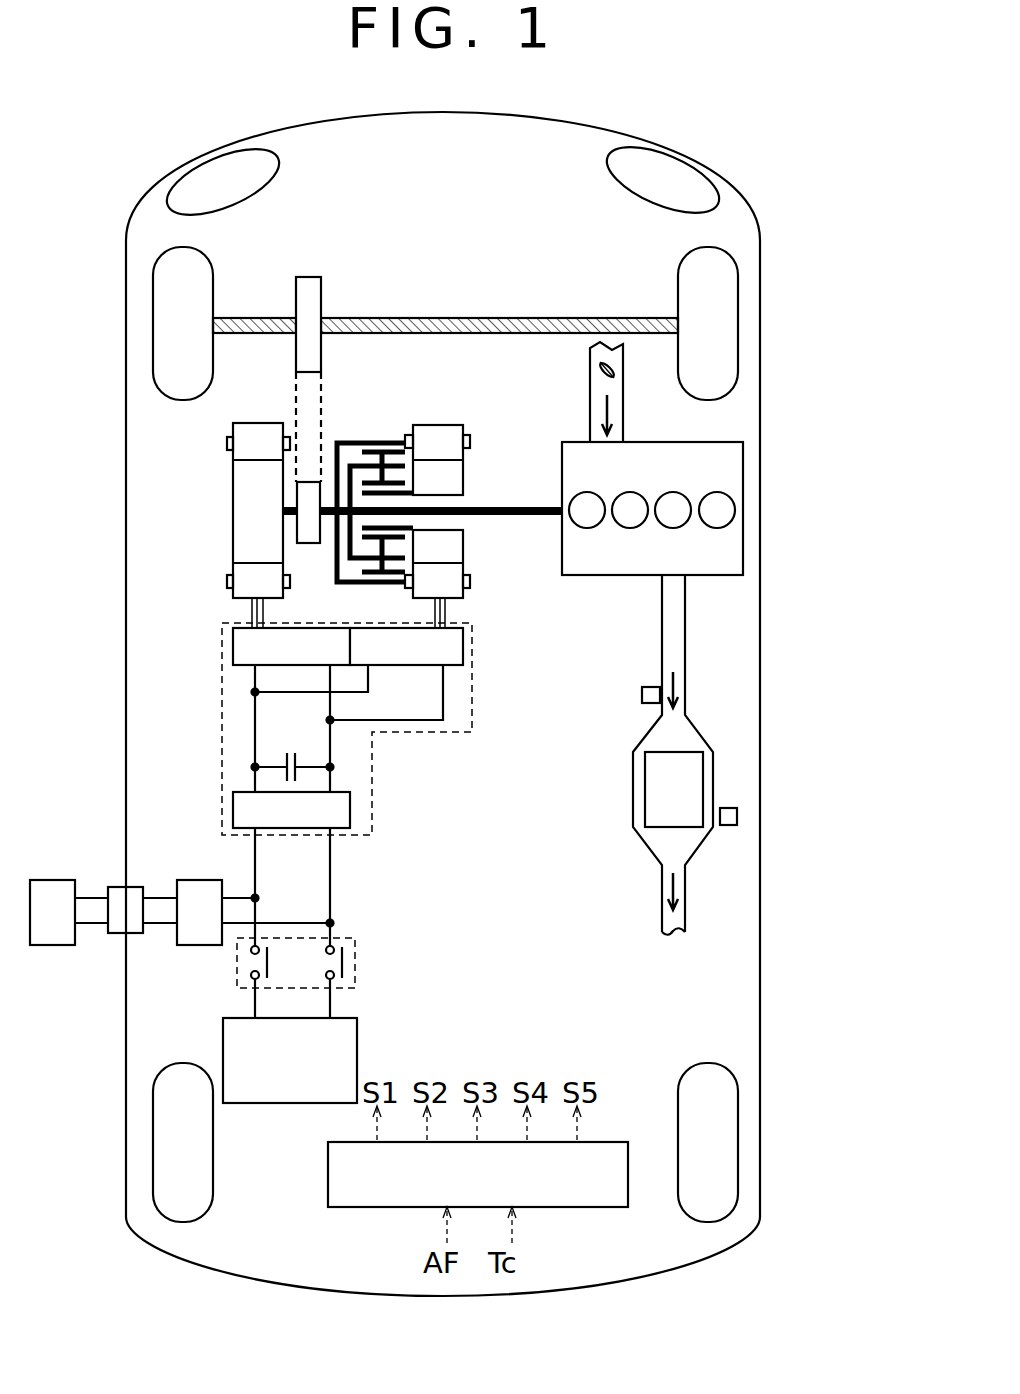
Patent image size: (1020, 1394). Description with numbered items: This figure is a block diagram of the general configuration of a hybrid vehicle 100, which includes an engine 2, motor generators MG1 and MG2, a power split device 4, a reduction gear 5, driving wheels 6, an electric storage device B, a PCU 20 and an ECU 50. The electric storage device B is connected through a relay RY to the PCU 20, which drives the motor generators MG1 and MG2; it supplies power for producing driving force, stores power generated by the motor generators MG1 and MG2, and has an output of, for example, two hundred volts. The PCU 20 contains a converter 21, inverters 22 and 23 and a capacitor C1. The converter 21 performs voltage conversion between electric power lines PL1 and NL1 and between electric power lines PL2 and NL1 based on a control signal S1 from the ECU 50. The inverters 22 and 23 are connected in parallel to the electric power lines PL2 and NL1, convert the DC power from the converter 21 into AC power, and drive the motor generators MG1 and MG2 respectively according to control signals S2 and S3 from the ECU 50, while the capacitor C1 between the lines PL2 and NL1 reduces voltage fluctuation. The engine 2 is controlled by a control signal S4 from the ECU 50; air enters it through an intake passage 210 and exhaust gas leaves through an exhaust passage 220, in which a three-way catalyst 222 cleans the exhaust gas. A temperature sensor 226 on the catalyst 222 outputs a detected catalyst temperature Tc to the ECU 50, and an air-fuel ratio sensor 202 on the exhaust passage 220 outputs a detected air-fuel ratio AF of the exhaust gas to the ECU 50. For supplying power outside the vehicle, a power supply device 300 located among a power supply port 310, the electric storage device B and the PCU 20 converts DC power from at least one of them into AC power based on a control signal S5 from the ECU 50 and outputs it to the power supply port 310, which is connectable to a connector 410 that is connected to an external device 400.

The hybrid vehicle 100 is at (106, 77).
The engine 2 is at (743, 556).
The power split device 4 is at (372, 440).
The reduction gear 5 is at (308, 272).
The driving wheels 6 is at (738, 330).
The motor generator MG1 is at (438, 425).
The motor generator MG2 is at (258, 423).
The PCU (Power Control Unit) 20 is at (347, 800).
The converter 21 is at (233, 803).
The inverter 22 is at (365, 627).
The inverter 23 is at (287, 628).
The ECU (Electronic Control Unit) 50 is at (328, 1172).
The air-fuel ratio sensor 202 is at (650, 687).
The intake passage 210 is at (623, 422).
The exhaust passage 220 is at (685, 683).
The catalyst 222 is at (703, 770).
The temperature sensor 226 is at (737, 815).
The power supply device 300 is at (202, 945).
The power supply port 310 is at (135, 935).
The external device 400 is at (48, 945).
The connector 410 is at (117, 933).
The electric storage device B is at (223, 1032).
The relay RY is at (355, 963).
The capacitor C1 is at (297, 740).
The electric power line PL1 is at (255, 858).
The electric power line PL2 is at (255, 715).
The electric power line NL1 is at (330, 742).
The control signal S1 is at (350, 810).
The control signal S2 is at (463, 648).
The control signal S3 is at (233, 648).
The control signal S4 is at (715, 578).
The control signal S5 is at (197, 878).
The air-fuel ratio AF is at (642, 695).
The catalyst temperature Tc is at (728, 826).